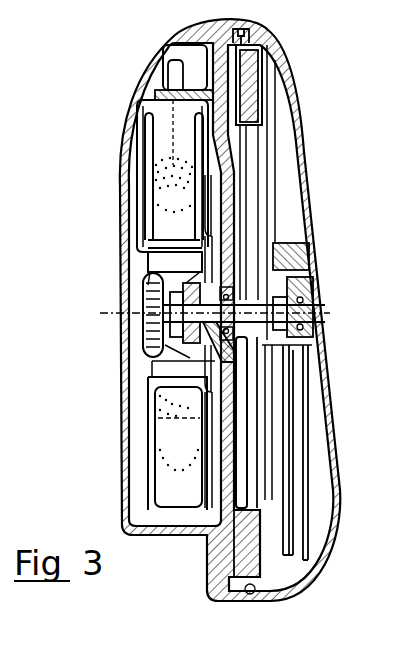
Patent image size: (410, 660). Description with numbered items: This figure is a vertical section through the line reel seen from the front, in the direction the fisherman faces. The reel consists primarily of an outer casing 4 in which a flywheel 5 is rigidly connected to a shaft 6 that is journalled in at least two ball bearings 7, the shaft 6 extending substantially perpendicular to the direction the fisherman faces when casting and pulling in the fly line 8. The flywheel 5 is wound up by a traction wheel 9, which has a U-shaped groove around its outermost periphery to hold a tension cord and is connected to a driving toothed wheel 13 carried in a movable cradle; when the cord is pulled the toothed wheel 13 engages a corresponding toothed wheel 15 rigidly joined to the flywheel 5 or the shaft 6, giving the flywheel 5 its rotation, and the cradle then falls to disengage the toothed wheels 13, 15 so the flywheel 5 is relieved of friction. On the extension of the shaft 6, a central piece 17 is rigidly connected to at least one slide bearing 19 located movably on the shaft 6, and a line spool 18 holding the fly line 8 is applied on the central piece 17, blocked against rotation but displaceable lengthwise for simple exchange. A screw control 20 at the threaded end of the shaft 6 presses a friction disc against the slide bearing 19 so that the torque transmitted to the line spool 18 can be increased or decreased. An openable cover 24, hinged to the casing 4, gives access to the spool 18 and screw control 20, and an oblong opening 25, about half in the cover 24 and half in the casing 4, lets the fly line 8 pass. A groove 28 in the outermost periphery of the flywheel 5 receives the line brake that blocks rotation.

The outer casing 4 is at (322, 248).
The flywheel 5 is at (250, 92).
The shaft 6 is at (210, 368).
The ball bearings 7 is at (320, 287).
The fly line 8 is at (158, 190).
The traction wheel 9 is at (297, 478).
The toothed wheel 13 is at (273, 420).
The toothed wheel 15 is at (277, 335).
The central piece 17 is at (158, 258).
The line spool 18 is at (160, 215).
The slide bearing 19 is at (150, 265).
The screw control 20 is at (160, 320).
The cover 24 is at (127, 137).
The opening 25 is at (173, 533).
The groove 28 is at (257, 580).